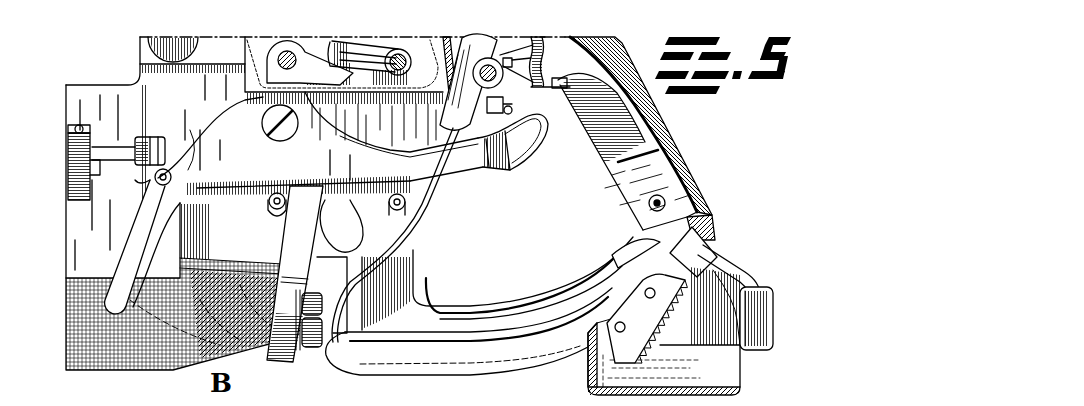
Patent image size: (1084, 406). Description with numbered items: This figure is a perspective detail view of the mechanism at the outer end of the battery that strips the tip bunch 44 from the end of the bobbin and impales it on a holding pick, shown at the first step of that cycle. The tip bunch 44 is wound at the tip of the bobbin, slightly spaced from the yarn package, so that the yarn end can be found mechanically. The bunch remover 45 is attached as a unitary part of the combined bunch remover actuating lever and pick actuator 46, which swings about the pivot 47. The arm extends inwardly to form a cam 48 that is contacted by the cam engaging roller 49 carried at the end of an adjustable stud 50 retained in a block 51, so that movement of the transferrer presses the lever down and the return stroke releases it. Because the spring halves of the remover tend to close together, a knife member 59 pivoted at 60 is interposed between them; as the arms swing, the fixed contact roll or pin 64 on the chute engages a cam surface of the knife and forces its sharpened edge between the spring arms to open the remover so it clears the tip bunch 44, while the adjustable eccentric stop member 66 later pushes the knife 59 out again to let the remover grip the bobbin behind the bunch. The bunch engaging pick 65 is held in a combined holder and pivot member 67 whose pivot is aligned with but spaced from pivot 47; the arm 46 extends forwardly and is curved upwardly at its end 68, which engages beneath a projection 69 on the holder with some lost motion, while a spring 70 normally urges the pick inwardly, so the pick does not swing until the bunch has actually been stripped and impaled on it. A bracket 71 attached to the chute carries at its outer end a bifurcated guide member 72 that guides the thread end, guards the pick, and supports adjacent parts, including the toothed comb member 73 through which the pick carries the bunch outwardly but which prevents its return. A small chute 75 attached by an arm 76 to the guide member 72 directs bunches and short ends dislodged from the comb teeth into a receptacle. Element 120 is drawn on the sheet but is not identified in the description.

The tip bunch 44 is at (307, 345).
The bunch remover 45 is at (290, 246).
The combined bunch remover actuating lever and pick actuator 46 is at (263, 172).
The pivot 47 is at (286, 53).
The cam 48 is at (140, 190).
The cam engaging roller 49 is at (170, 143).
The adjustable stud 50 is at (107, 147).
The block 51 is at (78, 157).
The knife member 59 is at (363, 243).
The pivot 60 is at (263, 122).
The contact roll or pin 64 is at (407, 203).
The bunch engaging pick 65 is at (403, 238).
The adjustable stop member 66 is at (277, 212).
The combined holder and pivot member 67 is at (492, 168).
The curved end 68 is at (533, 137).
The projection 69 is at (558, 89).
The spring 70 is at (503, 60).
The bracket 71 is at (637, 143).
The bifurcated guide member 72 is at (467, 323).
The comb member 73 is at (637, 320).
The small chute 75 is at (723, 363).
The arm 76 is at (740, 272).
The pin 120 is at (345, 52).